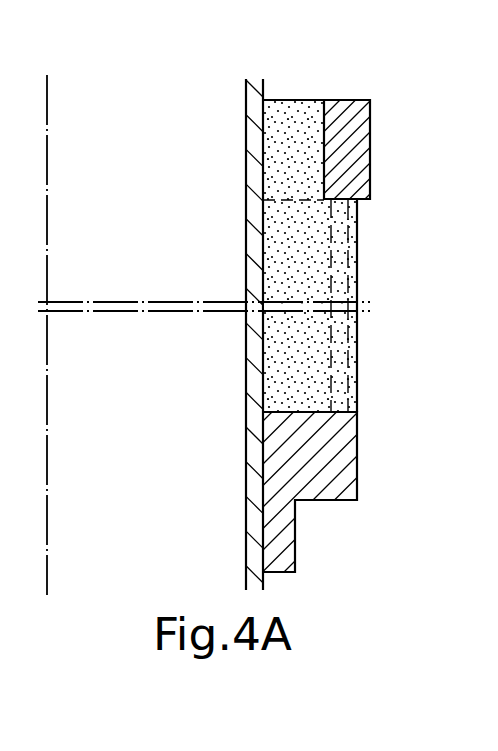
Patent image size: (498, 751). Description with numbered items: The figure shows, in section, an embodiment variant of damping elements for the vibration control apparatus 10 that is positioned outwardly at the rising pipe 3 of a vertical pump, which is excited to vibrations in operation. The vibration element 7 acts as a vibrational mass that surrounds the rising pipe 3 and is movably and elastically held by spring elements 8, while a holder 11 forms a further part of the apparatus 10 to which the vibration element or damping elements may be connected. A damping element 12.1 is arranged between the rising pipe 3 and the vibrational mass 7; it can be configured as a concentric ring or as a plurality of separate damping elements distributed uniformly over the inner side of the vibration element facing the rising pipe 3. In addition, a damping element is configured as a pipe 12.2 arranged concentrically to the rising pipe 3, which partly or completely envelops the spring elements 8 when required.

The apparatus 10 is at (336, 301).
The rising pipe 3 is at (255, 343).
The vibration element 7 is at (360, 148).
The spring elements 8 is at (343, 265).
The holder 11 is at (343, 457).
The damping element 12.1 is at (285, 112).
The pipe 12.2 is at (313, 323).